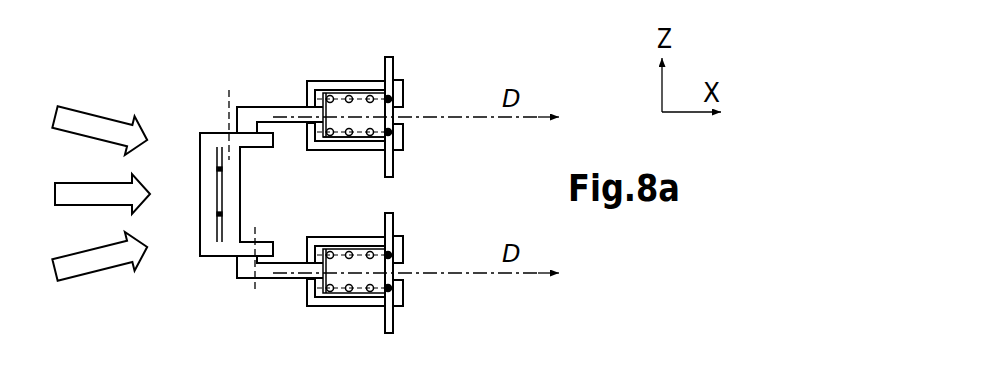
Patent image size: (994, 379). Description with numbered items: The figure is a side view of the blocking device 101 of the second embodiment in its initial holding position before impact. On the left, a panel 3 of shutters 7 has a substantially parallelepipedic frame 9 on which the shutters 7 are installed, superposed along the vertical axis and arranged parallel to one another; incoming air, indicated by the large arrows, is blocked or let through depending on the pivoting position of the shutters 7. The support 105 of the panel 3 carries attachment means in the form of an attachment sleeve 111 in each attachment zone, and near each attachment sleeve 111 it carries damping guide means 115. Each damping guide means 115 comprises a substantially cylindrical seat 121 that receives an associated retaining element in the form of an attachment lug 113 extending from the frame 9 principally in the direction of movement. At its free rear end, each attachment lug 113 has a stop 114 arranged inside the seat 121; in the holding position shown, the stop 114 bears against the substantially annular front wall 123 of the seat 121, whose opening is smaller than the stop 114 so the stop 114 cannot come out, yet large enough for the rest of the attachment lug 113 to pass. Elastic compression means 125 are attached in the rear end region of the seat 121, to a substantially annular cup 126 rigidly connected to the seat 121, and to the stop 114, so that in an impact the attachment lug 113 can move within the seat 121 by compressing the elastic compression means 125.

The panel of shutters 3 is at (205, 205).
The shutters 7 is at (217, 190).
The frame 9 is at (200, 158).
The mounting device 101 is at (375, 186).
The support 105 is at (400, 68).
The attachment sleeve 111 is at (395, 160).
The attachment lug 113 is at (257, 103).
The stop 114 is at (310, 104).
The damping guide means 115 is at (364, 186).
The seat 121 is at (358, 80).
The wall 123 is at (313, 130).
The elastic compression means 125 is at (367, 143).
The cup 126 is at (400, 90).